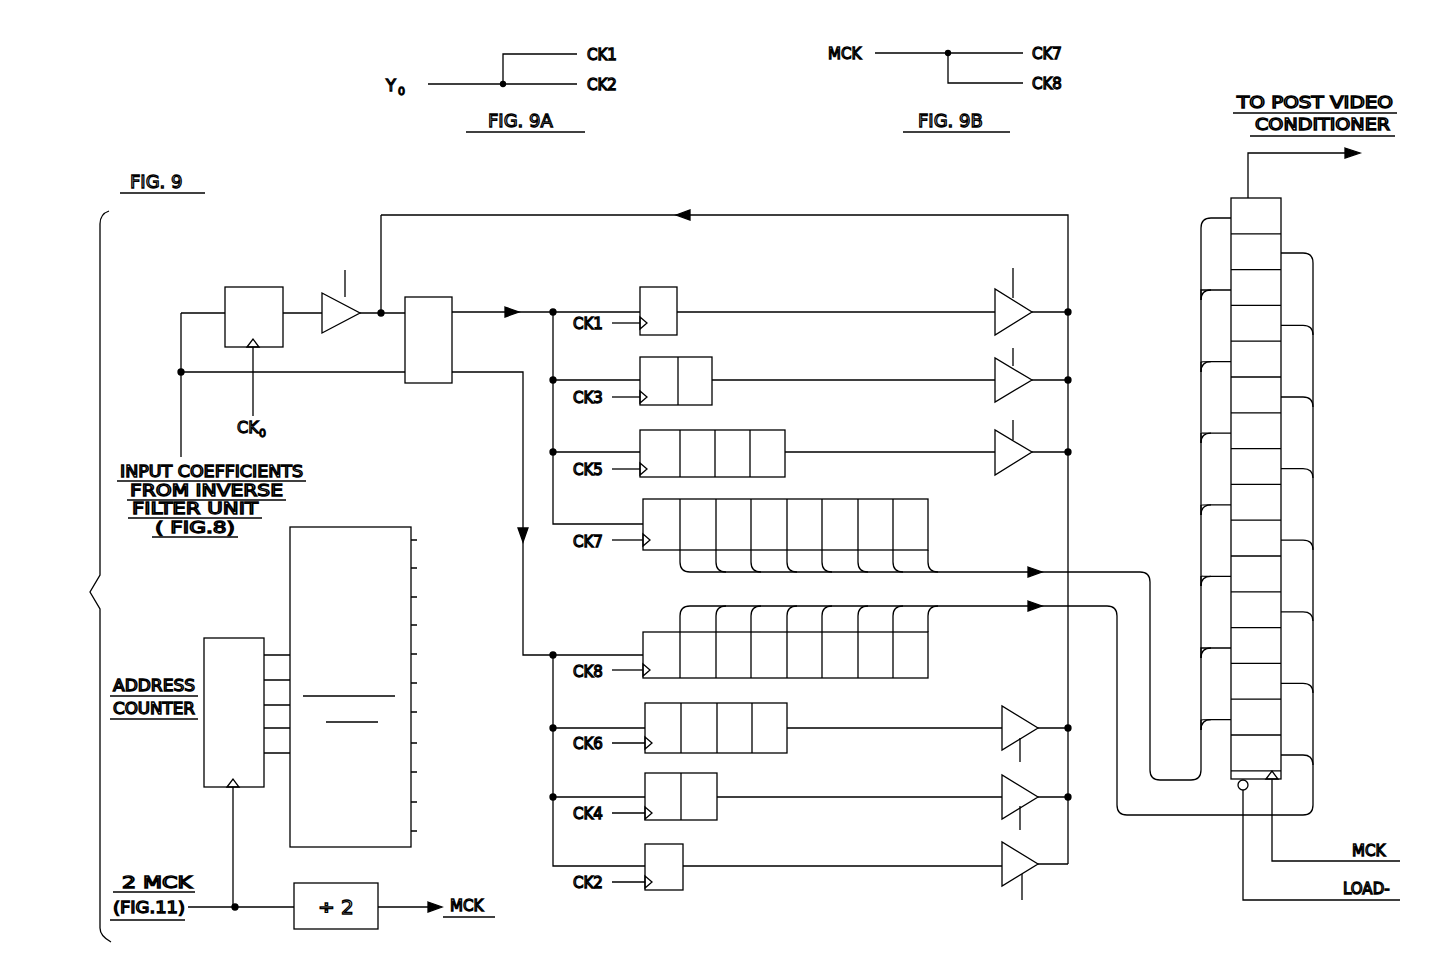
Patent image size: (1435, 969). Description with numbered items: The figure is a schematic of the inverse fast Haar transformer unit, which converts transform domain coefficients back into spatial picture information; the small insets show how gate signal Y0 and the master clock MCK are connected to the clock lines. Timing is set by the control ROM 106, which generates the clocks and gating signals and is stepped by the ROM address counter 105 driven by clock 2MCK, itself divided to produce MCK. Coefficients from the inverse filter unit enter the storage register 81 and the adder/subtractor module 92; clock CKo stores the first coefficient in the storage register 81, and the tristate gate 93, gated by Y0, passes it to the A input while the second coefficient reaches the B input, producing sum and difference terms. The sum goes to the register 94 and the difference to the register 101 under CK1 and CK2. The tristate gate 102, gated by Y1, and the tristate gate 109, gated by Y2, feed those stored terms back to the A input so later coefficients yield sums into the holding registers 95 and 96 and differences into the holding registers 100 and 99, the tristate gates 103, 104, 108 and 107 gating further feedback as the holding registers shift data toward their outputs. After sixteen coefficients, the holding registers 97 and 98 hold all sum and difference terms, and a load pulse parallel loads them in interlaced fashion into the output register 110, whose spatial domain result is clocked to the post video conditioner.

The storage register 81 is at (245, 296).
The adder/subtractor module 92 is at (428, 305).
The tristate gate 93 is at (328, 318).
The register 94 is at (655, 295).
The holding register 95 is at (652, 368).
The holding register 96 is at (653, 441).
The holding register 97 is at (652, 510).
The holding register 98 is at (668, 642).
The holding register 99 is at (673, 711).
The holding register 100 is at (668, 782).
The register 101 is at (665, 856).
The tristate gate 102 is at (1003, 300).
The tristate gate 103 is at (1003, 372).
The tristate gate 104 is at (1003, 443).
The ROM address counter 105 is at (216, 648).
The control ROM 106 is at (352, 540).
The tristate gate 107 is at (1020, 720).
The tristate gate 108 is at (1012, 790).
The tristate gate 109 is at (1012, 860).
The output register 110 is at (1267, 294).